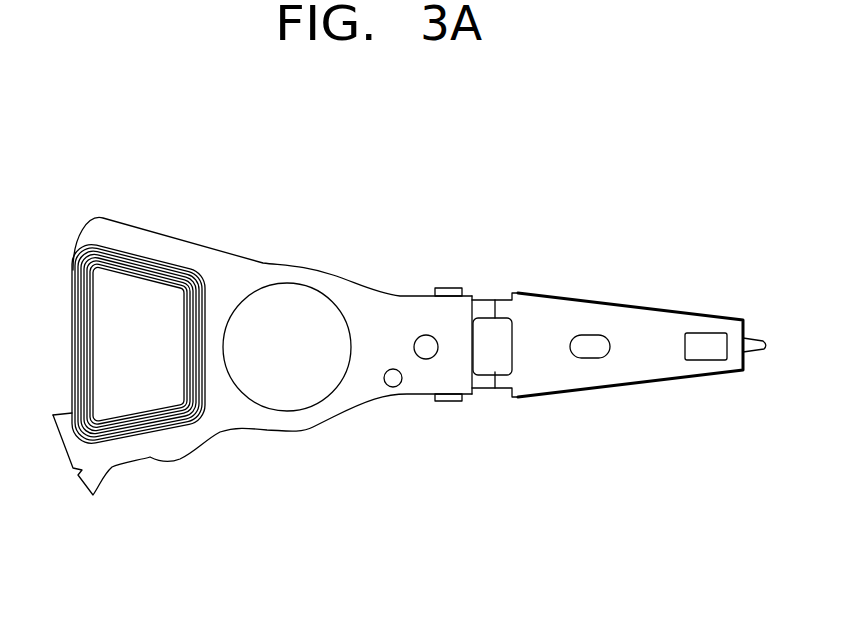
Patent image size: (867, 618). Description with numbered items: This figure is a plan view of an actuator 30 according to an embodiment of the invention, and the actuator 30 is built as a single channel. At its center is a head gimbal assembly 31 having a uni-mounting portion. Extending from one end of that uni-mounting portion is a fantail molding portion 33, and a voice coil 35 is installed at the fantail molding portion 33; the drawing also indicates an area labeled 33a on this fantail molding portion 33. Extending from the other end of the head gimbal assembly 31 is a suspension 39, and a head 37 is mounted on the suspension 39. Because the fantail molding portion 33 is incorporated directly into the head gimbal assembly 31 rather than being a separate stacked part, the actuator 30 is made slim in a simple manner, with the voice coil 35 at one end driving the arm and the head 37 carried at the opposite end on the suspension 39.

The actuator 30 is at (547, 248).
The head gimbal assembly 31 is at (262, 272).
The fantail molding portion 33 is at (103, 232).
The bobbin plate 33a is at (222, 422).
The voice coil 35 is at (157, 265).
The head 37 is at (718, 326).
The suspension 39 is at (596, 320).